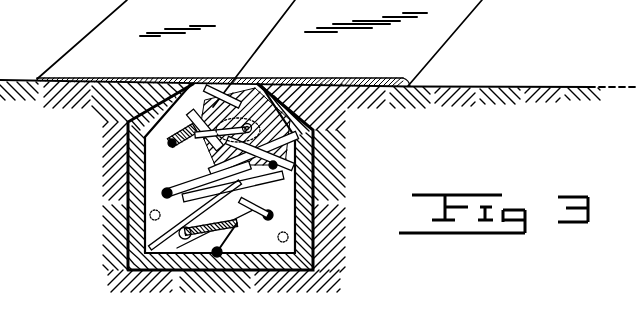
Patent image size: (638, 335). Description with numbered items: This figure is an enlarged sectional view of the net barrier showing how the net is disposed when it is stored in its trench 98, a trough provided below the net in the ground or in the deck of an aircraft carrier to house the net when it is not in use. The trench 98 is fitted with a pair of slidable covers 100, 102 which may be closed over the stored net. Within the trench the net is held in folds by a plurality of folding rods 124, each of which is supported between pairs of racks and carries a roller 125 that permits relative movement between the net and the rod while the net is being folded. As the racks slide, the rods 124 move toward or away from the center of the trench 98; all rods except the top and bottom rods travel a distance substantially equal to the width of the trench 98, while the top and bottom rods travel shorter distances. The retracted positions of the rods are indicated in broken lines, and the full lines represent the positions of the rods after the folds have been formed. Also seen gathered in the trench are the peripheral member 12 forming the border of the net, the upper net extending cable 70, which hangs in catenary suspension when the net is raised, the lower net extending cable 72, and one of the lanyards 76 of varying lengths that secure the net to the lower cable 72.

The slidable cover 100 is at (92, 78).
The slidable cover 102 is at (358, 88).
The peripheral member 12 is at (257, 100).
The net extending cable 70 is at (220, 92).
The net extending cable 72 is at (222, 273).
The lanyard 76 is at (225, 232).
The trench 98 is at (188, 273).
The folding rod 124 is at (283, 98).
The roller 125 is at (238, 100).